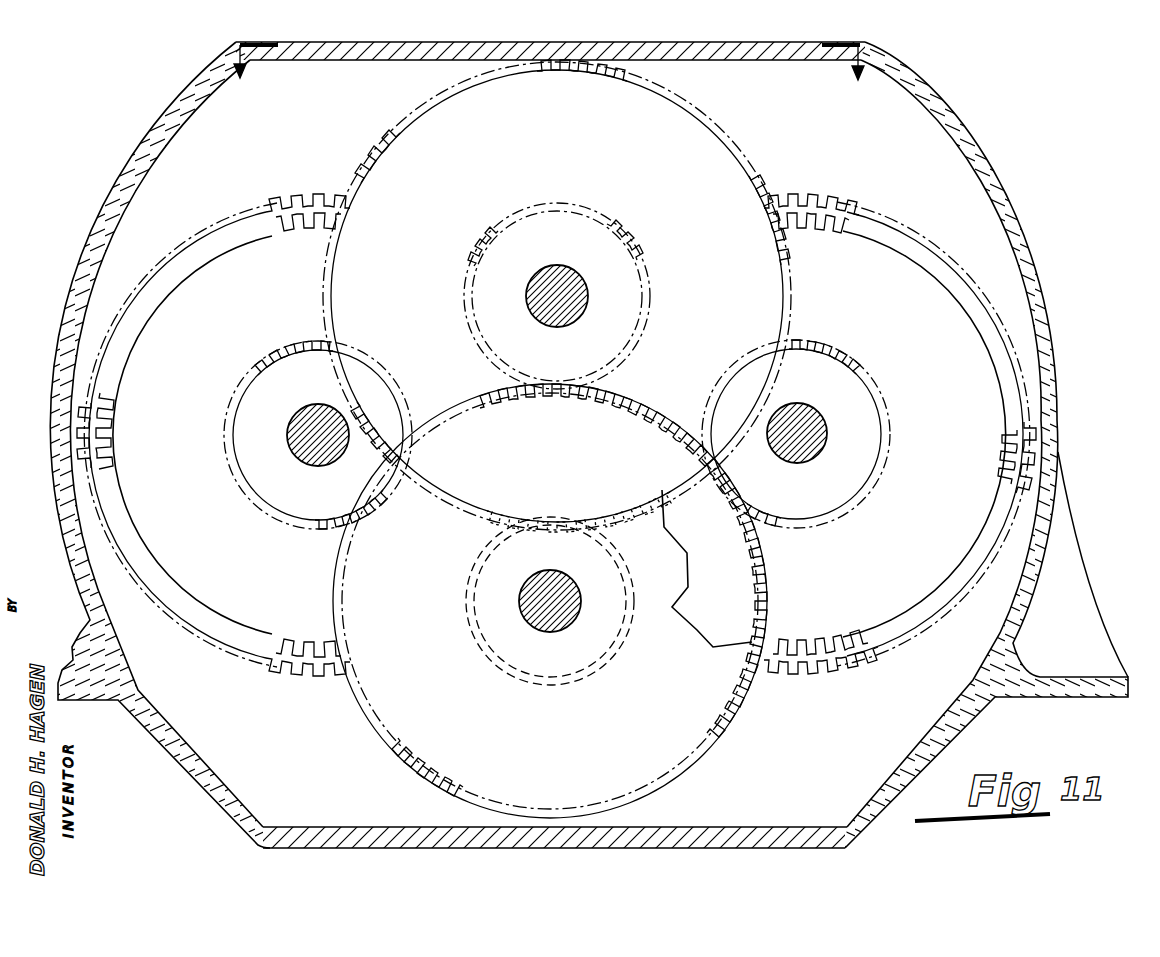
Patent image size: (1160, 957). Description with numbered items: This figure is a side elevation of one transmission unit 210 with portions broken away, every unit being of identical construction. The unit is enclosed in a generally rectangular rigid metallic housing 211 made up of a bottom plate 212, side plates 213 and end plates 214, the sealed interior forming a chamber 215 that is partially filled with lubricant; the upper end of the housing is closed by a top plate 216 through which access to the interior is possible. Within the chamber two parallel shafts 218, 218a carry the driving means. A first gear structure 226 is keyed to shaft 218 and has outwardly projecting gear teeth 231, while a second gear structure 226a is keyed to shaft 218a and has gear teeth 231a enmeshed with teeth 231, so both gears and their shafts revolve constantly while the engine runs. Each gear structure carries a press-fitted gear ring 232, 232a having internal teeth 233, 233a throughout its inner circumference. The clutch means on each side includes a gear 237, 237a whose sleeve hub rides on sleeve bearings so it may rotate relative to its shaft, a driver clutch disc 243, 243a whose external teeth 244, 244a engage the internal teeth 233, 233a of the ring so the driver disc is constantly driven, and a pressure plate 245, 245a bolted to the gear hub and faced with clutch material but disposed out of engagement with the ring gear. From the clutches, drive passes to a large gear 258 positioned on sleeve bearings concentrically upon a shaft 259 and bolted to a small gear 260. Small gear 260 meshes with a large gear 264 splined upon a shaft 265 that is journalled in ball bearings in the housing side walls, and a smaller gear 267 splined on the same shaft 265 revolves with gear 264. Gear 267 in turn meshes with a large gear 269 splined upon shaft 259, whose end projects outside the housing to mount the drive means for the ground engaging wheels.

The transmission unit 210 is at (986, 90).
The housing 211 is at (112, 190).
The bottom plate 212 is at (355, 848).
The side plates 213 is at (557, 296).
The end plates 214 is at (968, 190).
The chamber 215 is at (965, 187).
The top plate 216 is at (327, 60).
The shaft 218 is at (289, 434).
The shaft 218a is at (793, 466).
The first gear structure 226 is at (268, 172).
The second gear structure 226a is at (882, 170).
The gear teeth 231 is at (97, 402).
The gear teeth 231a is at (1028, 432).
The gear ring 232 is at (93, 430).
The gear ring 232a is at (1028, 452).
The internal teeth 233 is at (282, 229).
The internal teeth 233a is at (844, 236).
The gear 237 is at (300, 352).
The gear 237a is at (841, 356).
The driver clutch disc 243 is at (295, 676).
The driver clutch disc 243a is at (811, 662).
The external teeth 244 is at (300, 204).
The external teeth 244a is at (804, 203).
The pressure plate 245 is at (192, 435).
The pressure plate 245a is at (924, 434).
The large gear 258 is at (760, 560).
The shaft 259 is at (560, 566).
The small gear 260 is at (486, 540).
The large gear 264 is at (766, 180).
The shaft 265 is at (571, 262).
The smaller gear 267 is at (492, 228).
The large gear 269 is at (665, 393).